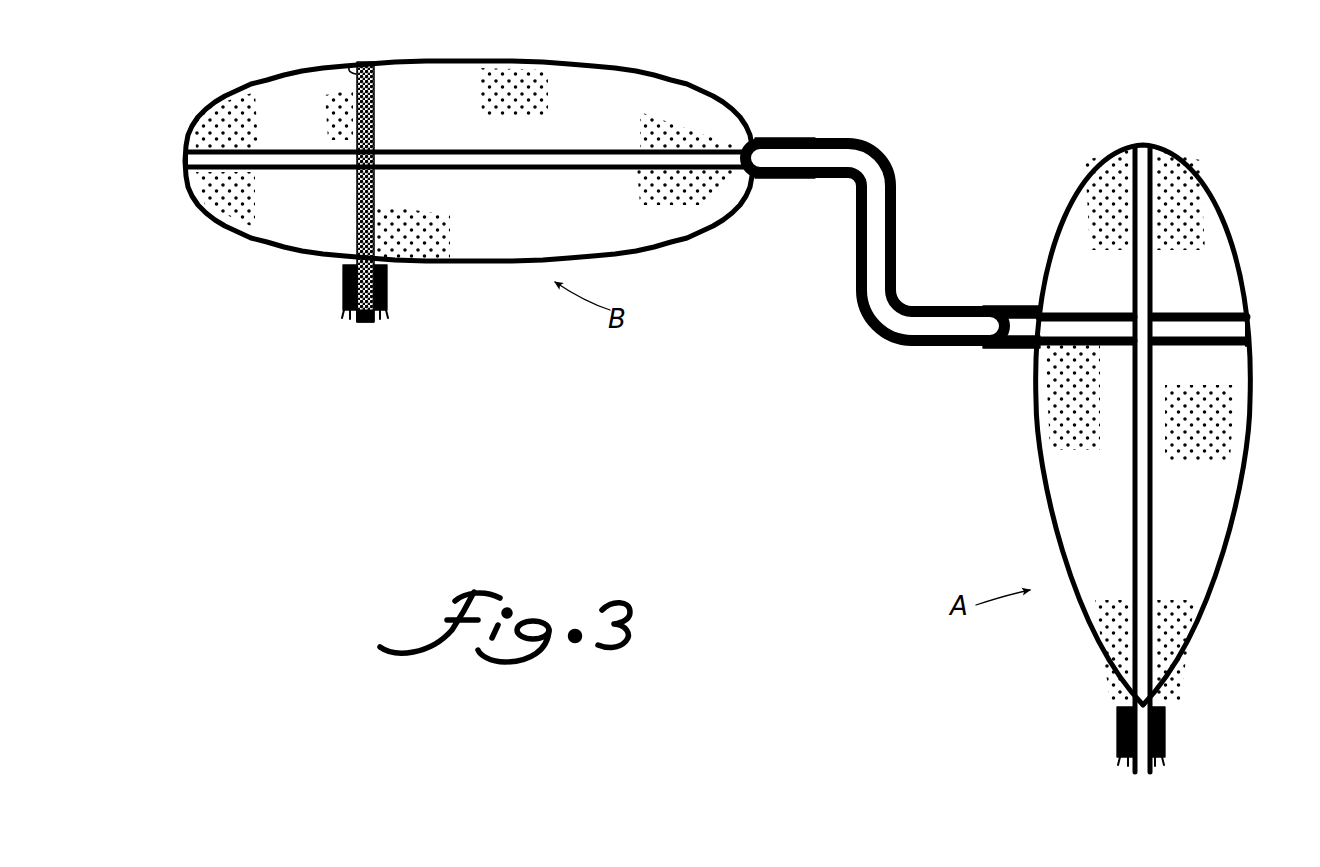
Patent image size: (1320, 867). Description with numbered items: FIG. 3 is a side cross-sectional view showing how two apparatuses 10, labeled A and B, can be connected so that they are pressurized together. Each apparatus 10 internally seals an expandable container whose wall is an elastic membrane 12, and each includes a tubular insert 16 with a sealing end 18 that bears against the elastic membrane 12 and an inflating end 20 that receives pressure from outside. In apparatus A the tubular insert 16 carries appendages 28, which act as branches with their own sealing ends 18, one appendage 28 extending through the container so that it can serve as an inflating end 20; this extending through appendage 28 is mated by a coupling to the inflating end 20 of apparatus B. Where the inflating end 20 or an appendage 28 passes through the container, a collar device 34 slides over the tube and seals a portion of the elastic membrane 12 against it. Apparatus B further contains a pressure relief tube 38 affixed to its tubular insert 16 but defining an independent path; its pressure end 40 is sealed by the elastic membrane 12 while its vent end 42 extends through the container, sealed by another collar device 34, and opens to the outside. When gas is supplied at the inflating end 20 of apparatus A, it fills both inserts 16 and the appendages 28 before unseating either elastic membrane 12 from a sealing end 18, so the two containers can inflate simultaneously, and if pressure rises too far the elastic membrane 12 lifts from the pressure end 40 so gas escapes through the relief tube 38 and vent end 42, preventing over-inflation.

The apparatus 10 is at (320, 372).
The elastic membrane 12 is at (273, 84).
The tubular insert 16 is at (623, 131).
The sealing end 18 is at (199, 149).
The inflating end 20 is at (830, 178).
The appendage 28 is at (1075, 318).
The collar device 34 is at (388, 288).
The pressure relief tube 38 is at (375, 128).
The pressure end 40 is at (342, 70).
The vent end 42 is at (365, 322).